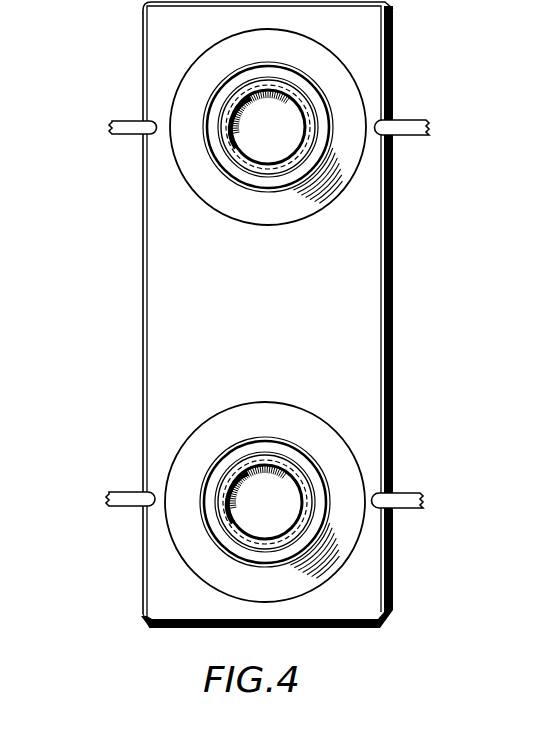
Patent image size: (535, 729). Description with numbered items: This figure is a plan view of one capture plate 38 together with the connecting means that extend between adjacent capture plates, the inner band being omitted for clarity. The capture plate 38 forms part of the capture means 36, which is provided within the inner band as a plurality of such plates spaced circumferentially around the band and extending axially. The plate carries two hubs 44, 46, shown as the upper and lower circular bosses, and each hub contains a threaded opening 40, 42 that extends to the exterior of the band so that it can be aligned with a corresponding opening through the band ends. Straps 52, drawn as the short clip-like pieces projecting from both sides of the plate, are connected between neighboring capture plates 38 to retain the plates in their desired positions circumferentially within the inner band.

The capture means 36 is at (112, 275).
The capture plate 38 is at (147, 342).
The threaded opening 40 is at (257, 533).
The threaded opening 42 is at (259, 166).
The hub 44 is at (233, 576).
The hub 46 is at (197, 162).
The strap 52 is at (127, 120).